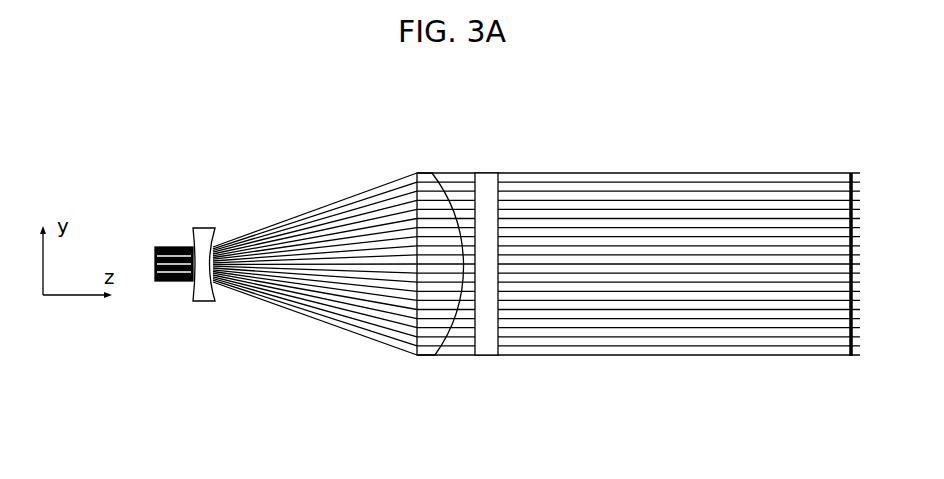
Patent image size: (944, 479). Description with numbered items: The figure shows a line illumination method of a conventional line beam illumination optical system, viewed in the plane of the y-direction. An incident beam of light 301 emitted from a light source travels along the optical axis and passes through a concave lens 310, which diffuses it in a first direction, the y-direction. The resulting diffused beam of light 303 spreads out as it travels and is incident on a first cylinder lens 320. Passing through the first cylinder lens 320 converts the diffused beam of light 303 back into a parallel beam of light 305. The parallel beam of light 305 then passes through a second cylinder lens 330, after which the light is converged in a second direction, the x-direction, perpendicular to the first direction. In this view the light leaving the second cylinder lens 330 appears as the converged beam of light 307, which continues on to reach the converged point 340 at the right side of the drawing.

The incident beam of light 301 is at (175, 247).
The concave lens 310 is at (206, 228).
The diffused beam of light 303 is at (326, 200).
The first cylinder lens 320 is at (417, 172).
The parallel beam of light 305 is at (453, 172).
The second cylinder lens 330 is at (488, 172).
The converged beam of light 307 is at (665, 172).
The converged point 340 is at (849, 172).